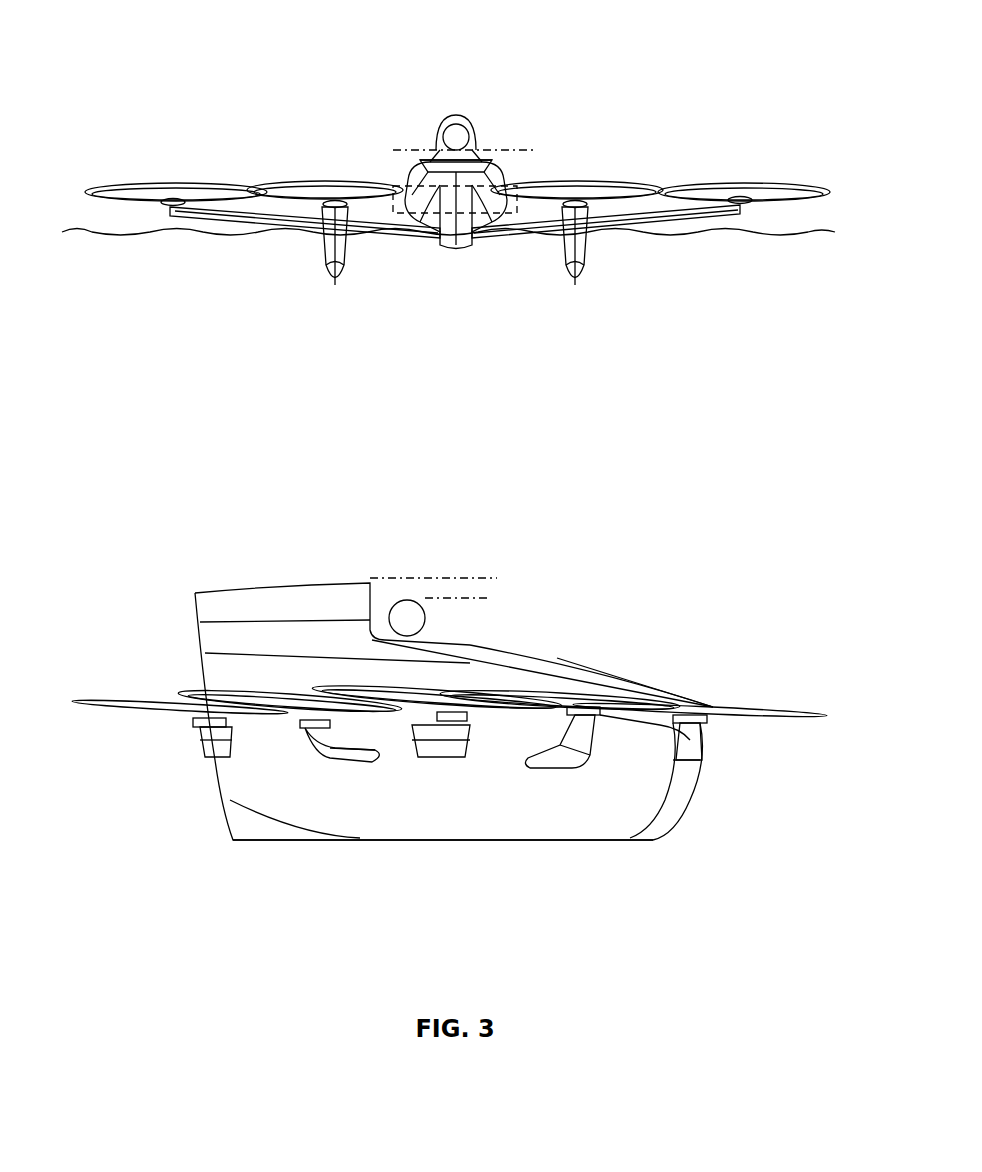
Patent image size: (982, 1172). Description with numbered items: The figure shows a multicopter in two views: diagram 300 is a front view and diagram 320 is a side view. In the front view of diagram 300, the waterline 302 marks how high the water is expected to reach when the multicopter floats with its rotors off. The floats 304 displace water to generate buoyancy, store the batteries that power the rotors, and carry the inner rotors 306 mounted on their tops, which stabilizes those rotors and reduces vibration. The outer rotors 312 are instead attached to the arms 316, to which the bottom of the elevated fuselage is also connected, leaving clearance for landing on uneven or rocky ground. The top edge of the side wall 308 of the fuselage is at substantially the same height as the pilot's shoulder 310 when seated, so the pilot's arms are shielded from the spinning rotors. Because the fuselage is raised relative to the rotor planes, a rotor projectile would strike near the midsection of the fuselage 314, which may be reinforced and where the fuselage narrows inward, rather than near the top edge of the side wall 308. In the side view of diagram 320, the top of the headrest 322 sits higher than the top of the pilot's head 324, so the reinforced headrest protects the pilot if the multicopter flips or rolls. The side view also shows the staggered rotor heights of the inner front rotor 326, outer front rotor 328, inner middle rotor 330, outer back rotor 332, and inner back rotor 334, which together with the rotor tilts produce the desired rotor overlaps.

The diagram 300 is at (740, 57).
The waterline 302 is at (176, 235).
The floats 304 is at (335, 287).
The inner rotors 306 is at (290, 180).
The top edge of side wall 308 is at (518, 152).
The pilot's shoulder height 310 is at (406, 150).
The outer rotors 312 is at (153, 183).
The midsection of fuselage 314 is at (476, 240).
The arms 316 is at (673, 223).
The diagram 320 is at (740, 530).
The top of headrest 322 is at (450, 576).
The top of pilot's head 324 is at (465, 598).
The inner front rotor 326 is at (705, 760).
The outer front rotor 328 is at (568, 740).
The inner middle rotor 330 is at (445, 728).
The outer back rotor 332 is at (282, 727).
The inner back rotor 334 is at (217, 727).